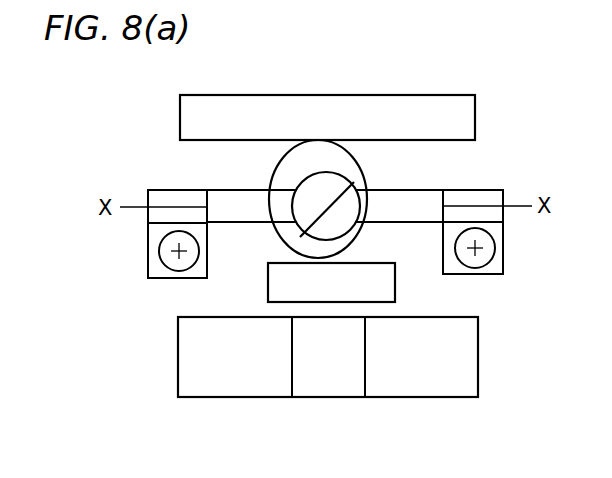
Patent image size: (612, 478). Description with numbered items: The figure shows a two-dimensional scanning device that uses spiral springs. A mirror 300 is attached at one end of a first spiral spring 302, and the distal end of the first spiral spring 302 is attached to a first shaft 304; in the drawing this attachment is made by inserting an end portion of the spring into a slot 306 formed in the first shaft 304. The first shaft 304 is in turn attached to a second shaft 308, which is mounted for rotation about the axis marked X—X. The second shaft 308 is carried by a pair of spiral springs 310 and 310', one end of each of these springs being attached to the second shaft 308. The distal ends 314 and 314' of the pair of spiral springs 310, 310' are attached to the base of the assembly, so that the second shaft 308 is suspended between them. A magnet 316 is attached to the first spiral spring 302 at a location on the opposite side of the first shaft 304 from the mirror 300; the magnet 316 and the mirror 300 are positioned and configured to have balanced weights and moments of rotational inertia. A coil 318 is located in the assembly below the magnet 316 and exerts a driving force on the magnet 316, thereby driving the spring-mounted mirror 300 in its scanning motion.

The mirror 300 is at (445, 95).
The first spiral spring 302 is at (268, 176).
The first shaft 304 is at (335, 171).
The slot 306 is at (360, 210).
The second shaft 308 is at (393, 212).
The spiral spring 310 is at (148, 180).
The spiral spring 310' is at (513, 206).
The distal end 314 is at (142, 276).
The distal end 314' is at (519, 269).
The magnet 316 is at (268, 276).
The coil 318 is at (440, 382).